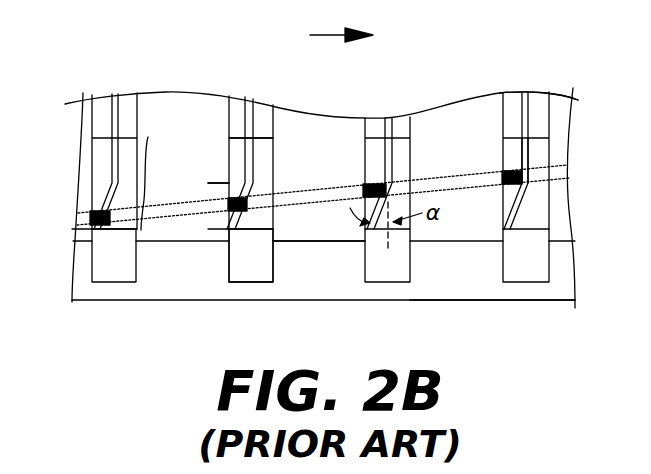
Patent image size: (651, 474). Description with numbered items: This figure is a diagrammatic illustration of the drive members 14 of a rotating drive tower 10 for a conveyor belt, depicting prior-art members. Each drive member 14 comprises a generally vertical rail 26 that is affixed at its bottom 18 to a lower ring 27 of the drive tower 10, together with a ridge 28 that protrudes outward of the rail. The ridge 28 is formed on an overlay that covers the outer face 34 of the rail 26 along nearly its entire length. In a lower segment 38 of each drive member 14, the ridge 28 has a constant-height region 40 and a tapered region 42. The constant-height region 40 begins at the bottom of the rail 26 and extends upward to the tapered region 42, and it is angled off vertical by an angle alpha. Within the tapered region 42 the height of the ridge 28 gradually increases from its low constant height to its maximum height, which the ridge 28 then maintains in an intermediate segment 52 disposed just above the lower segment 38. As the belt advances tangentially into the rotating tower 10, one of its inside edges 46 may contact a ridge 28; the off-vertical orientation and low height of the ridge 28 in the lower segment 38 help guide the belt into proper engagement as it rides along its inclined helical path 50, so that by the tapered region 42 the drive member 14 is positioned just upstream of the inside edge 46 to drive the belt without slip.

The drive tower 10 is at (335, 290).
The drive member 14 is at (546, 215).
The bottom 18 is at (288, 302).
The rail 26 is at (542, 262).
The lower ring 27 is at (480, 290).
The ridge 28 is at (527, 152).
The outer face 34 is at (242, 240).
The lower segment 38 is at (152, 180).
The constant-height region 40 is at (208, 183).
The tapered region 42 is at (253, 162).
The inside edge 46 is at (92, 222).
The helical path 50 is at (177, 212).
The intermediate segment 52 is at (549, 101).